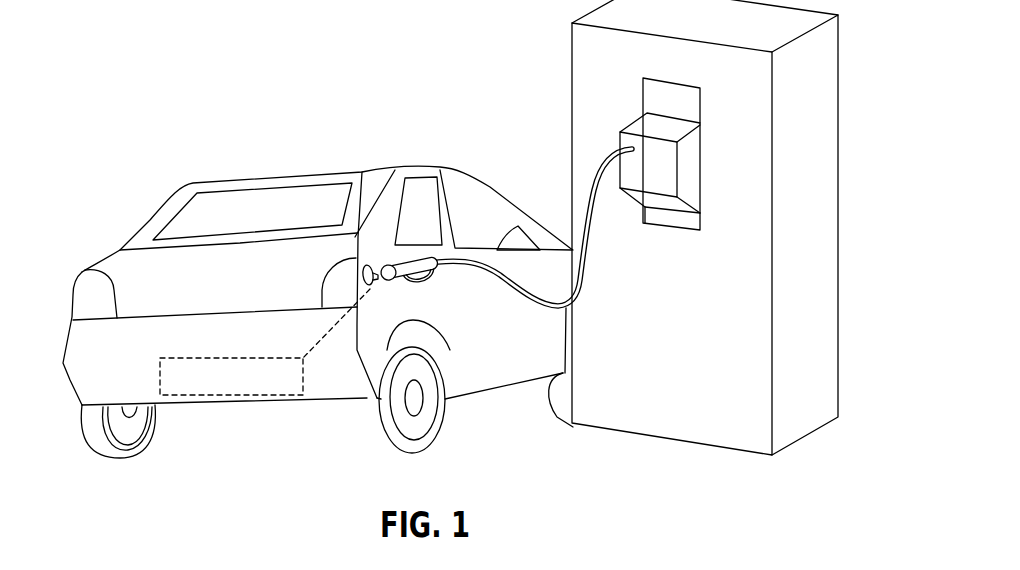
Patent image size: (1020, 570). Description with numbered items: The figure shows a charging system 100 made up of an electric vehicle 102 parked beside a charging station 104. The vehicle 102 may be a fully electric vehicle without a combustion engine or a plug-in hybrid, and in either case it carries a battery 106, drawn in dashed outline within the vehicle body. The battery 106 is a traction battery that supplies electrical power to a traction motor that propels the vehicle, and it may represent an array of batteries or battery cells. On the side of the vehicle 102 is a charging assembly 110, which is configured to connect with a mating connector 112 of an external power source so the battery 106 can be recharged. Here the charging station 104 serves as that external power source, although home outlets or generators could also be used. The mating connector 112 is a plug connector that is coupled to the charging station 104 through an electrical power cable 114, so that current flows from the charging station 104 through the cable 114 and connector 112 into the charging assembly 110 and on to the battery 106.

The charging system 100 is at (323, 62).
The electric vehicle 102 is at (495, 345).
The charging station 104 is at (827, 110).
The battery 106 is at (257, 389).
The charging assembly 110 is at (382, 256).
The mating connector 112 is at (413, 266).
The electrical power cable 114 is at (497, 268).